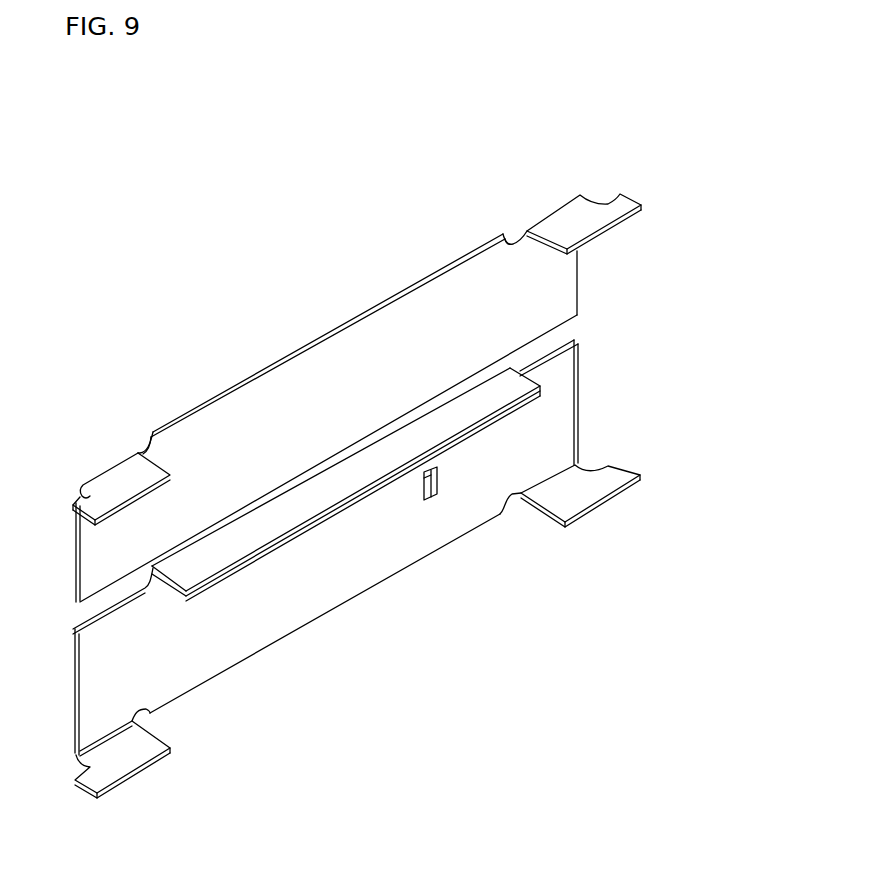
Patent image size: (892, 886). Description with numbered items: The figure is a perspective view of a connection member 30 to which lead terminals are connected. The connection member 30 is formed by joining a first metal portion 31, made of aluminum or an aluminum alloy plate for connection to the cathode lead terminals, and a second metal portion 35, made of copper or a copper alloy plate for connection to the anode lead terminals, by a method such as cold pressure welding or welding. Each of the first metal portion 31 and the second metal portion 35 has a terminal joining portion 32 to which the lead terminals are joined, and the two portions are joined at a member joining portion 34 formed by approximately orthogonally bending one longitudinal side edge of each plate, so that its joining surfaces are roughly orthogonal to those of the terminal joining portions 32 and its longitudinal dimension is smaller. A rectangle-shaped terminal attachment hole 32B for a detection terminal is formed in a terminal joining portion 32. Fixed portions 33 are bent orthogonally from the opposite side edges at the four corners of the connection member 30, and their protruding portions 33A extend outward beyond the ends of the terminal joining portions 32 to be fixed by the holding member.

The connection member 30 is at (356, 269).
The first metal portion 31 is at (284, 392).
The terminal joining portion 32 is at (92, 553).
The terminal attachment hole 32B is at (427, 500).
The fixed portions 33 is at (388, 493).
The protruding portions 33A is at (610, 207).
The member joining portion 34 is at (510, 385).
The second metal portion 35 is at (315, 593).